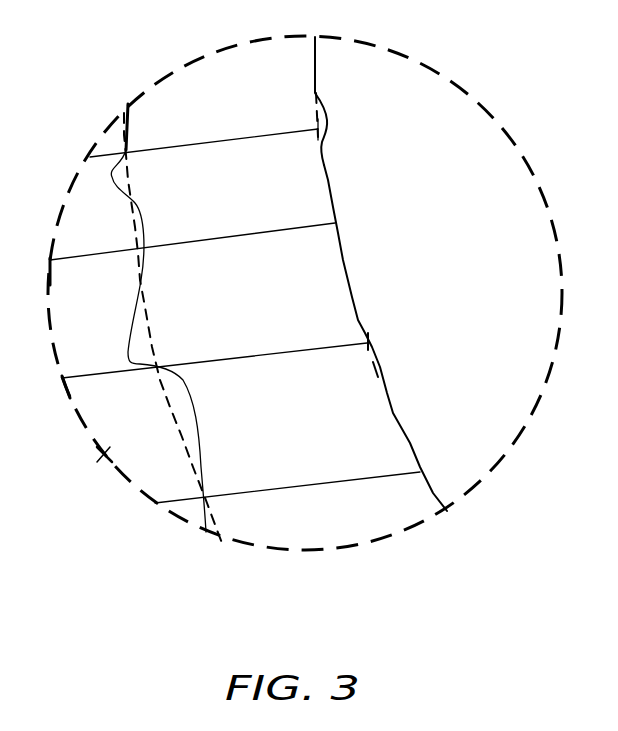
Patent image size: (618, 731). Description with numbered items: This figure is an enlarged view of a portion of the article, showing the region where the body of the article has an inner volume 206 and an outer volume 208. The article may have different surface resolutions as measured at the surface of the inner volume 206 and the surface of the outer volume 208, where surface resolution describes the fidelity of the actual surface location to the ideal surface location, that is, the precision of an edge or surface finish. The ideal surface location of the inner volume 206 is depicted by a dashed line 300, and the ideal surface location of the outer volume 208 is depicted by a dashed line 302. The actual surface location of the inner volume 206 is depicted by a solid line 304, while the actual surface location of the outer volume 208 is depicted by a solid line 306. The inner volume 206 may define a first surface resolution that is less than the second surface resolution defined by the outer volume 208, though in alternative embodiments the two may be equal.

The inner volume 206 is at (97, 457).
The outer volume 208 is at (358, 533).
The dashed line 300 is at (152, 345).
The dashed line 302 is at (373, 380).
The solid line 304 is at (203, 475).
The solid line 306 is at (328, 133).